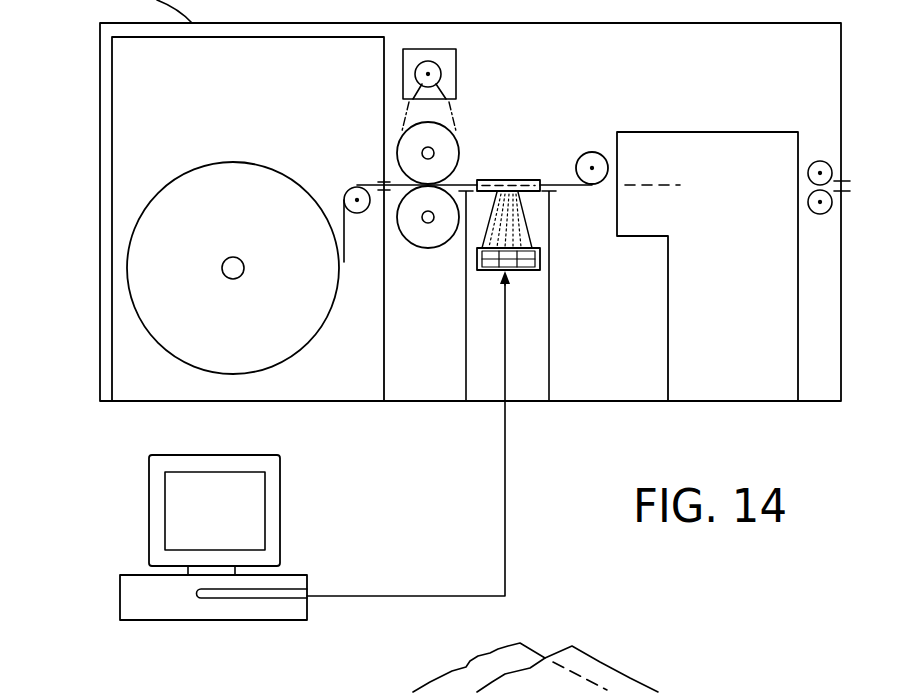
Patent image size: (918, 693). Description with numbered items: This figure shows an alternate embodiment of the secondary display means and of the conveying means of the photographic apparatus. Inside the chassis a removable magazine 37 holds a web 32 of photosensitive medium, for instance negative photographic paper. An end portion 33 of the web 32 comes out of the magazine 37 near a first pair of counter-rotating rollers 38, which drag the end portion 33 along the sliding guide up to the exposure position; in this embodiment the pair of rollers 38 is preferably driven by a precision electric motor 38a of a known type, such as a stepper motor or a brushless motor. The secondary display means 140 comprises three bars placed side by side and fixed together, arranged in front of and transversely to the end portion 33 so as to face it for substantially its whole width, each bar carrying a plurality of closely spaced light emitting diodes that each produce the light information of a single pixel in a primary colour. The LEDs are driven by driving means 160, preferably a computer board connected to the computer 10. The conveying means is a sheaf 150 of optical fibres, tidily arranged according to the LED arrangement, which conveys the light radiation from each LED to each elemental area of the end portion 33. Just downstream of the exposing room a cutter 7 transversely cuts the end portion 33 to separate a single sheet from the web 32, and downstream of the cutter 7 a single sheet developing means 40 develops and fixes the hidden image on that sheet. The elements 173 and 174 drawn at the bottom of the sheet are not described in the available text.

The cutter 7 is at (594, 155).
The computer 10 is at (298, 504).
The web 32 is at (157, 180).
The end portion 33 is at (510, 173).
The removable magazine 37 is at (153, 93).
The first pair of counter-rotating rollers 38 is at (464, 139).
The precision electric motor 38a is at (450, 68).
The single sheet developing means 40 is at (712, 142).
The secondary display means 140 is at (530, 285).
The sheaf of optical fibres 150 is at (540, 226).
The driving means 160 is at (242, 596).
The web material sheet 173 is at (702, 692).
The web material edge 174 is at (630, 677).